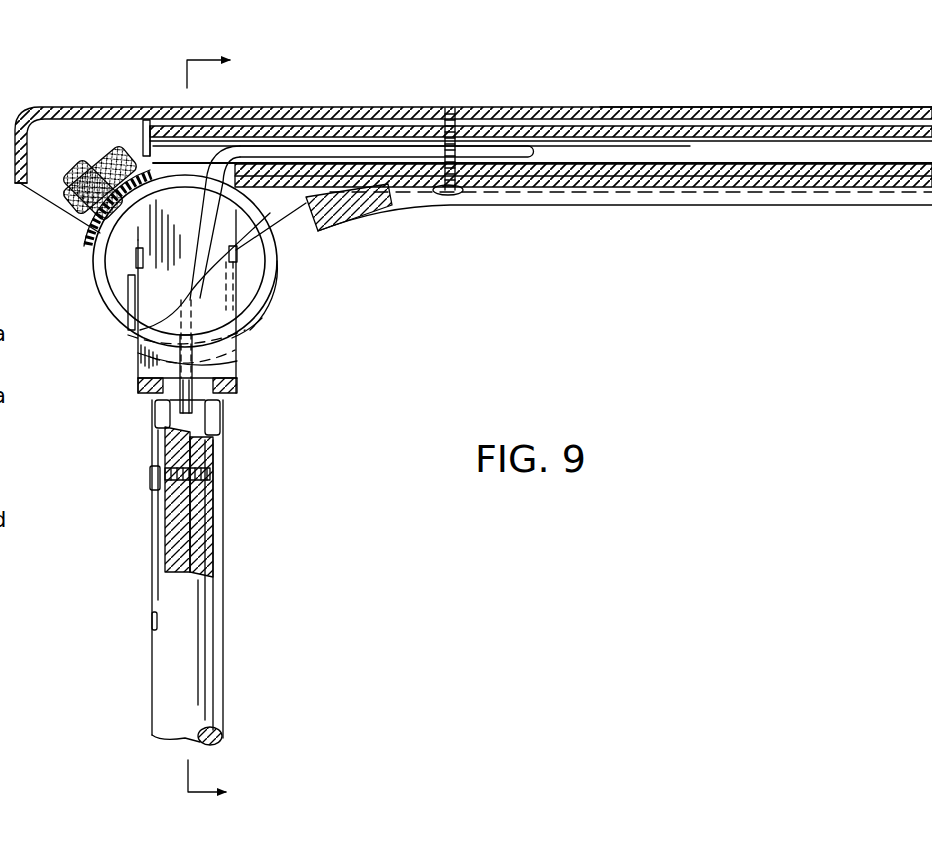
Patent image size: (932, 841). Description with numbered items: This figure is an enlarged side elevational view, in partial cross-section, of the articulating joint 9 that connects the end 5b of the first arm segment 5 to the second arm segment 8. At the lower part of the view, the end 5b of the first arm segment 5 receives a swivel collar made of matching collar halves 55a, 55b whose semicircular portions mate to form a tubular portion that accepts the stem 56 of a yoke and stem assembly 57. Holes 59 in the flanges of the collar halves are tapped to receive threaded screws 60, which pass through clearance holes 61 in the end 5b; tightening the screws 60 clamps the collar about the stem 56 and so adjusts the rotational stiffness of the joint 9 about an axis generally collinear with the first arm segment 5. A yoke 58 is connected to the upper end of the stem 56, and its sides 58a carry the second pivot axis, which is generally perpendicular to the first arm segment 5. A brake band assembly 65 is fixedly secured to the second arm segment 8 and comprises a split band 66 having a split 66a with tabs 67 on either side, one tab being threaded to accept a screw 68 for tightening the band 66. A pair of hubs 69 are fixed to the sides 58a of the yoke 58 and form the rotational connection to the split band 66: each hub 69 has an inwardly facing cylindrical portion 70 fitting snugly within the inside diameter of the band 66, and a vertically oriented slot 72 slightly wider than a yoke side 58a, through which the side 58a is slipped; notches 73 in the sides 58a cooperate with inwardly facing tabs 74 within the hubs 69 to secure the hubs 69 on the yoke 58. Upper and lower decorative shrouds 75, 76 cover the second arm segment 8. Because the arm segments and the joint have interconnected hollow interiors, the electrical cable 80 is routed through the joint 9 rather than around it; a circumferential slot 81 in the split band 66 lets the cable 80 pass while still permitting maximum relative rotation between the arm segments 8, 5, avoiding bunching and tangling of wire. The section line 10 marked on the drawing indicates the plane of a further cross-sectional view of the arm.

The first arm segment 5 is at (230, 668).
The end of first arm segment 5b is at (226, 412).
The second arm segment 8 is at (726, 88).
The joint 9 is at (292, 318).
The section line 10 is at (185, 431).
The collar half 55a is at (170, 521).
The collar half 55b is at (200, 529).
The stem 56 is at (153, 417).
The yoke and stem assembly 57 is at (250, 367).
The yoke 58 is at (138, 372).
The sides of yoke 58a is at (138, 357).
The holes 59 is at (200, 504).
The threaded screws 60 is at (150, 479).
The clearance holes 61 is at (162, 498).
The brake band assembly 65 is at (70, 291).
The split band 66 is at (284, 266).
The split 66a is at (115, 148).
The tabs 67 is at (72, 168).
The screw 68 is at (72, 218).
The hubs 69 is at (237, 248).
The cylindrical portion 70 is at (108, 300).
The slot 72 is at (240, 344).
The notches 73 is at (145, 269).
The tabs 74 is at (135, 262).
The upper decorative shroud 75 is at (556, 104).
The lower decorative shroud 76 is at (610, 206).
The electrical cable 80 is at (287, 108).
The circumferential slot 81 is at (265, 300).